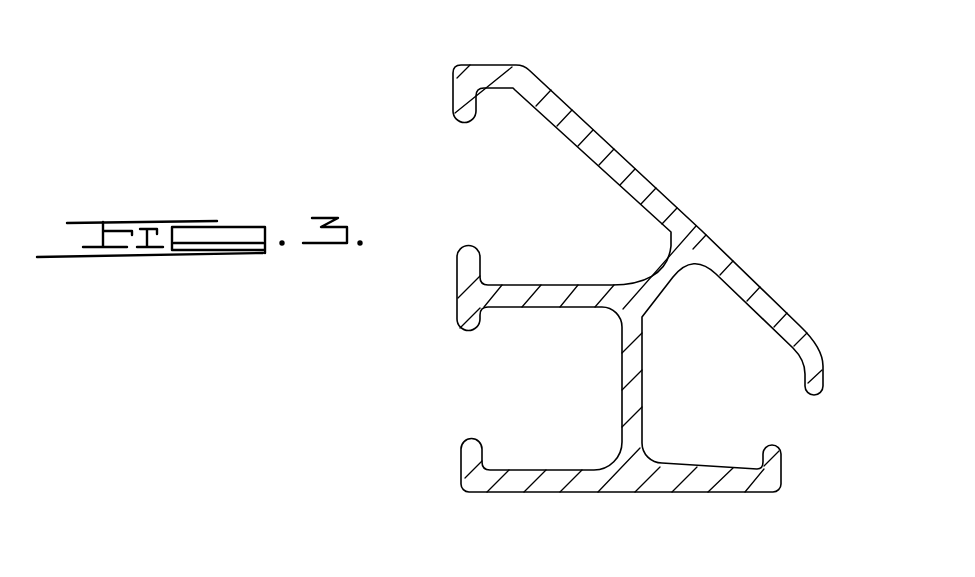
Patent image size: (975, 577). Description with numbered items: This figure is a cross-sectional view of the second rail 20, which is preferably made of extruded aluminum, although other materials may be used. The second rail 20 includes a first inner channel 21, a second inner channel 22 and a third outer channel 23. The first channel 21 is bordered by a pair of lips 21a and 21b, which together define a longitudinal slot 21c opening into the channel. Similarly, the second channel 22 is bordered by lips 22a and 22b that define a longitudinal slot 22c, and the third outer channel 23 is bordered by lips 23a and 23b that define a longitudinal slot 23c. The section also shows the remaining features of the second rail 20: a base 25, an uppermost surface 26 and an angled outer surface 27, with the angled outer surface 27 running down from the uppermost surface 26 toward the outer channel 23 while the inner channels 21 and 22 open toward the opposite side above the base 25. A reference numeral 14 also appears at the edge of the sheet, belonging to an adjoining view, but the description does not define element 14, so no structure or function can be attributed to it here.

The panel 14 is at (278, 0).
The second rail 20 is at (705, 152).
The first inner channel 21 is at (503, 165).
The lip 21a is at (458, 117).
The lip 21b is at (463, 259).
The longitudinal slot 21c is at (468, 214).
The second inner channel 22 is at (509, 386).
The lip 22a is at (463, 333).
The lip 22b is at (470, 450).
The longitudinal slot 22c is at (468, 418).
The third outer channel 23 is at (722, 335).
The lip 23a is at (820, 386).
The lip 23b is at (772, 453).
The longitudinal slot 23c is at (782, 419).
The base 25 is at (605, 492).
The uppermost surface 26 is at (482, 63).
The angled outer surface 27 is at (603, 133).